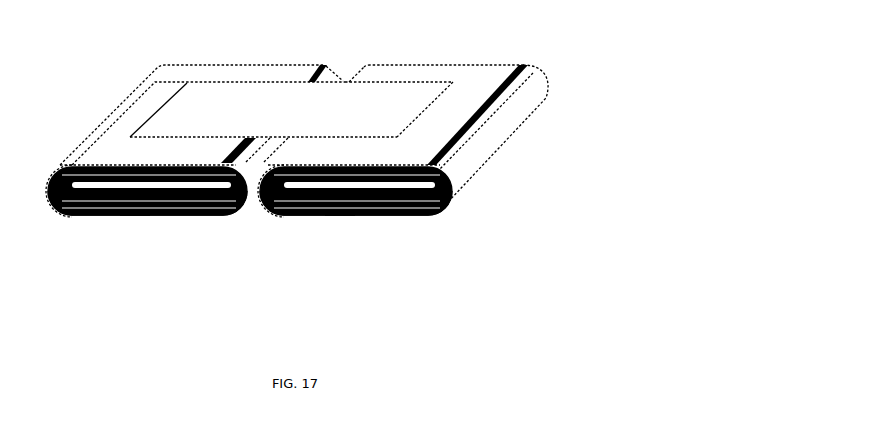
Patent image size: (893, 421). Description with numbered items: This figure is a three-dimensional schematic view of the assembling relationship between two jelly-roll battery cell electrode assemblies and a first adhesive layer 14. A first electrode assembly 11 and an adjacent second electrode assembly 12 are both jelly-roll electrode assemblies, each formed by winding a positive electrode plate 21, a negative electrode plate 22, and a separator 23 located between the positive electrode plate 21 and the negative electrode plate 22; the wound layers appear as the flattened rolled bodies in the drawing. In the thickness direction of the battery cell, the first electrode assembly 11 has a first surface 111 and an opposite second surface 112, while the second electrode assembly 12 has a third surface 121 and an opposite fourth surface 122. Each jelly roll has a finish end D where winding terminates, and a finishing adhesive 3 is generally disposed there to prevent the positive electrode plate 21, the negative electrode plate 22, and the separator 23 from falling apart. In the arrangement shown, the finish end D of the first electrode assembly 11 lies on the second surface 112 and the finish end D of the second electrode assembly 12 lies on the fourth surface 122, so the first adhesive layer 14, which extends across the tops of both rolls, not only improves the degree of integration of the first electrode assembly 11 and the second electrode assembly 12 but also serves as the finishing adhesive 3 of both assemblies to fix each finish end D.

The first electrode assembly 11 is at (228, 169).
The second electrode assembly 12 is at (396, 165).
The first surface 111 is at (147, 211).
The second surface 112 is at (212, 65).
The third surface 121 is at (356, 210).
The fourth surface 122 is at (432, 65).
The first adhesive layer 14 is at (191, 85).
The positive electrode plate 21 is at (170, 164).
The negative electrode plate 22 is at (192, 216).
The separator 23 is at (66, 206).
The finishing adhesive 3 is at (143, 214).
The finish end D is at (133, 219).